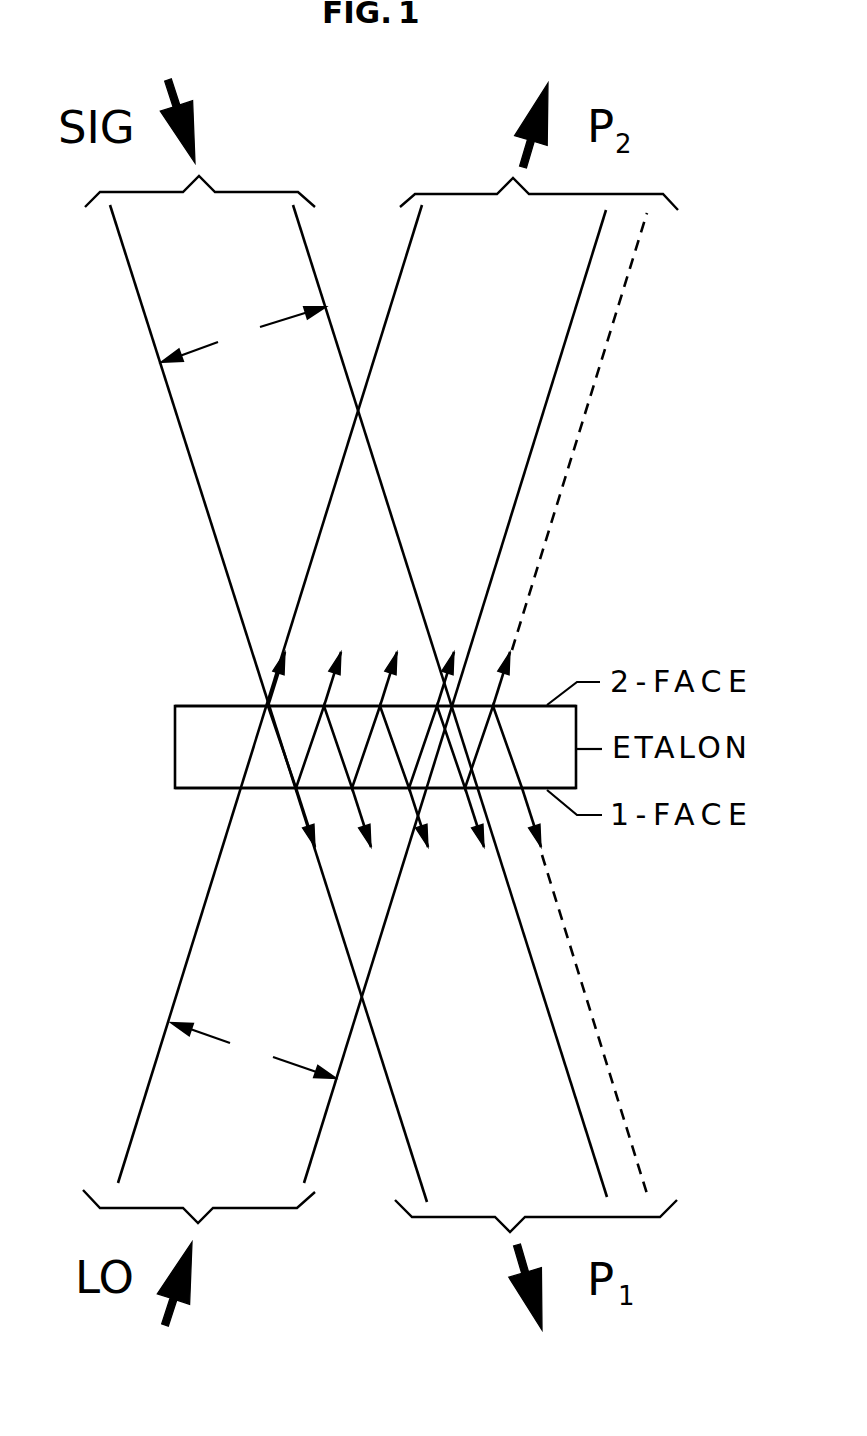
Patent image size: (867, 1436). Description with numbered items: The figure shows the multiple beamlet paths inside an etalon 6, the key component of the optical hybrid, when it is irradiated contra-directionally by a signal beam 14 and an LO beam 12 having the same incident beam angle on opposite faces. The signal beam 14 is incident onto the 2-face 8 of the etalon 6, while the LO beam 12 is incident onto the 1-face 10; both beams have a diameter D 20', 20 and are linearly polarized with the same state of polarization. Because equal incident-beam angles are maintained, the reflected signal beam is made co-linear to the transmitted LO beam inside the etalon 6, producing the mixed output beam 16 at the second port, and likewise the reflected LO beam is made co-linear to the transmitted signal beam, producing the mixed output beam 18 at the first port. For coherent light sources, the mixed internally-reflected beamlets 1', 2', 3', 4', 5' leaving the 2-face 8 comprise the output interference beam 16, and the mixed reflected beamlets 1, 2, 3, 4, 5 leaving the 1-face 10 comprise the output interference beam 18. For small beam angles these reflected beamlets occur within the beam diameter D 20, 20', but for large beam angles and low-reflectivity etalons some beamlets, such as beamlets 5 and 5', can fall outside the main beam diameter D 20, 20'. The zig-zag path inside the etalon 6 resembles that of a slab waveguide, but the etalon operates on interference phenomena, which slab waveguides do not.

The etalon 6 is at (176, 750).
The 2-face 8 is at (198, 705).
The 1-face 10 is at (198, 790).
The LO beam 12 is at (190, 1278).
The signal beam 14 is at (194, 134).
The mixed output beam P2 16 is at (515, 125).
The mixed output beam P1 18 is at (515, 1288).
The beam diameter D 20 is at (253, 1029).
The beam diameter D 20' is at (243, 353).
The mixed reflected beamlet 1 is at (296, 837).
The mixed reflected beamlet 2 is at (364, 837).
The mixed reflected beamlet 3 is at (423, 837).
The mixed reflected beamlet 4 is at (478, 837).
The mixed reflected beamlet 5 is at (528, 837).
The mixed internally-reflected beamlet 1' is at (276, 659).
The mixed internally-reflected beamlet 2' is at (342, 659).
The mixed internally-reflected beamlet 3' is at (397, 659).
The mixed internally-reflected beamlet 4' is at (453, 659).
The mixed internally-reflected beamlet 5' is at (528, 659).